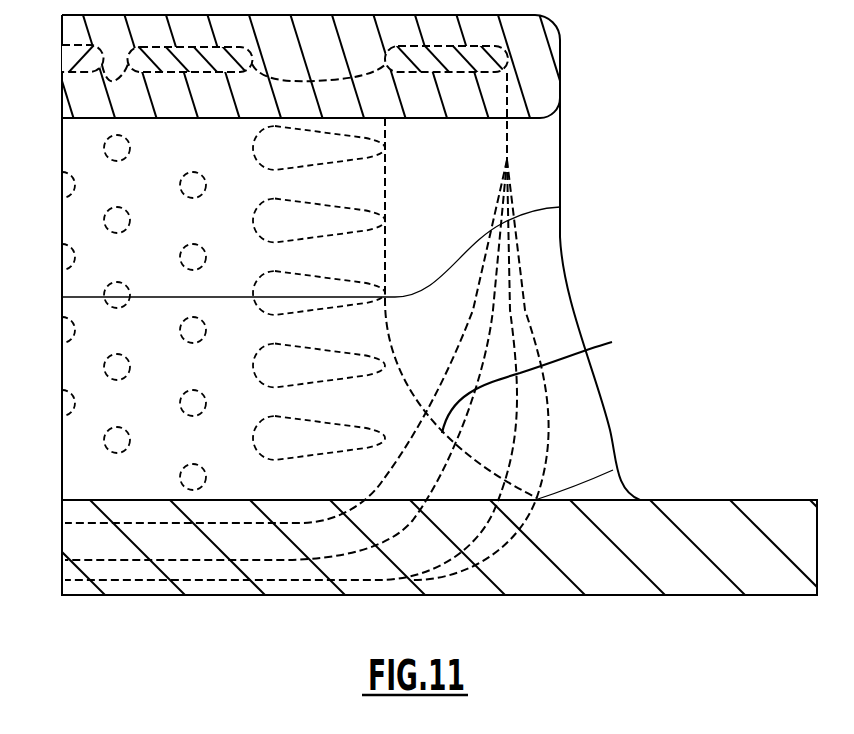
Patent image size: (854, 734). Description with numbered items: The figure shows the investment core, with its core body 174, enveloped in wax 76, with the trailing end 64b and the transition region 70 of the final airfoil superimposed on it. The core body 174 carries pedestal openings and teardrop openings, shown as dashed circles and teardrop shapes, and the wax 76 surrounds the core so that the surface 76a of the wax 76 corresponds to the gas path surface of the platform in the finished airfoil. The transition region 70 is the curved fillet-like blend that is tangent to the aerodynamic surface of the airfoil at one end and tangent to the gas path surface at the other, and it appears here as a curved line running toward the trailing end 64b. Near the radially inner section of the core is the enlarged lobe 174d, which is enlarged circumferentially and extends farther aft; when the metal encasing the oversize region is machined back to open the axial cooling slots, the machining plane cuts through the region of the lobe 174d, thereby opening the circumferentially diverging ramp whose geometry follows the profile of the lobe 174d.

The trailing end 64b is at (385, 255).
The transition region 70 is at (543, 384).
The wax 76 is at (537, 148).
The surface of the wax 76a is at (693, 500).
The core body 174 is at (214, 577).
The enlarged lobe 174d is at (553, 412).